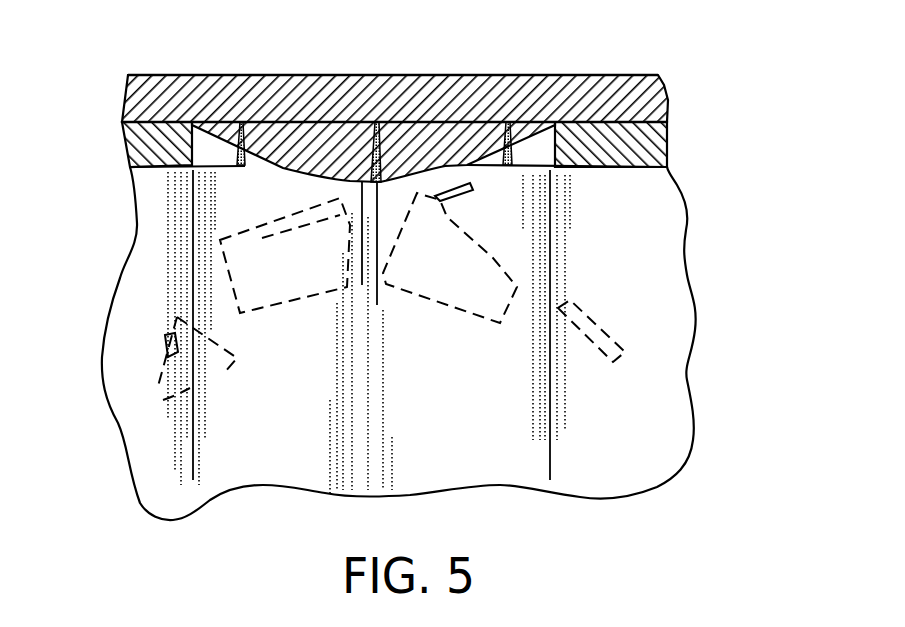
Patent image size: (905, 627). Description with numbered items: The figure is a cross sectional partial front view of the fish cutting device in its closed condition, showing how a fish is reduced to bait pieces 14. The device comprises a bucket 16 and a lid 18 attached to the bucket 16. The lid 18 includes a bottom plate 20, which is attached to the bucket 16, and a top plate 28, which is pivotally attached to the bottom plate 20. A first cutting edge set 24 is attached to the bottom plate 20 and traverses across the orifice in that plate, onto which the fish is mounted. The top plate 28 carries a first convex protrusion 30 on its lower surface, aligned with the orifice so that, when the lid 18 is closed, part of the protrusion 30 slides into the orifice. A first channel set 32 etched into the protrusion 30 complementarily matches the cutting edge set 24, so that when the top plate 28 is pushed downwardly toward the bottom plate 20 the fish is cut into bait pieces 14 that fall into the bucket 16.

The bait pieces 14 is at (247, 277).
The bucket 16 is at (647, 445).
The lid 18 is at (667, 122).
The bottom plate 20 is at (667, 148).
The first cutting edge set 24 is at (235, 168).
The top plate 28 is at (667, 95).
The first convex protrusion 30 is at (340, 75).
The first channel set 32 is at (243, 122).